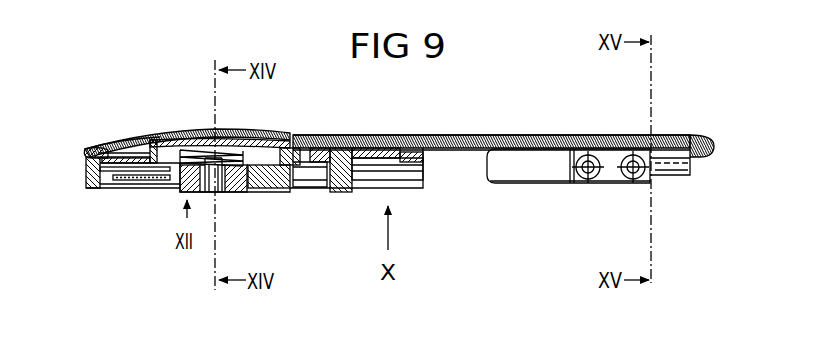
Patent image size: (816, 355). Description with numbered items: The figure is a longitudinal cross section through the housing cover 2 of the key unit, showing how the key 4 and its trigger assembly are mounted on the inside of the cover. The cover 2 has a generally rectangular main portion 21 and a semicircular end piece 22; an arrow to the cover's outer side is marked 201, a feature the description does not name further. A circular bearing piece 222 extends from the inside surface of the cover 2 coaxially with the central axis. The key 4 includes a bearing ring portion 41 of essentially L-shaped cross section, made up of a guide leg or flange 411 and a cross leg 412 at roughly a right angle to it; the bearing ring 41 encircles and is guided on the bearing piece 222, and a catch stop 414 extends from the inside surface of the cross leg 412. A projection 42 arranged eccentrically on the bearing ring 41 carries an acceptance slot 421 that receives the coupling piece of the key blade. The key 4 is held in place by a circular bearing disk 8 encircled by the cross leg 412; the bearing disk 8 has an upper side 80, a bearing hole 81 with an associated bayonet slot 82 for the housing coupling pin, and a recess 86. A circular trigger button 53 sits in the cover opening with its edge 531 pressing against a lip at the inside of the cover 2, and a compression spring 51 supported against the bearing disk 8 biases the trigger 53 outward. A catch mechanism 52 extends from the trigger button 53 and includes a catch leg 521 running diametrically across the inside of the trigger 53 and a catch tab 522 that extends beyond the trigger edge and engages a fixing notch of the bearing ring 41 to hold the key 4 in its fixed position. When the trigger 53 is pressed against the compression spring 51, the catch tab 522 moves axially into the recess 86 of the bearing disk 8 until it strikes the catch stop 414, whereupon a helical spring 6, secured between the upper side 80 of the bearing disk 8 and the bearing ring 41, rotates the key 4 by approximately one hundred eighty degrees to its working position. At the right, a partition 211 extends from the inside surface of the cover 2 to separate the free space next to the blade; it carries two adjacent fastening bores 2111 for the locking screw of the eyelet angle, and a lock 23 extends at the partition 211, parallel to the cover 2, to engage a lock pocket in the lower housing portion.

The housing cover 2 is at (683, 134).
The plate upper surface 201 is at (579, 132).
The main portion 21 is at (503, 184).
The partition 211 is at (549, 186).
The fastening bores 2111 is at (633, 181).
The semicircular end piece 22 is at (94, 149).
The bearing piece 222 is at (279, 198).
The lock 23 is at (672, 178).
The key 4 is at (415, 197).
The bearing ring portion 41 is at (76, 198).
The guide leg 411 is at (322, 137).
The cross leg 412 is at (336, 196).
The catch stop 414 is at (96, 205).
The projection 42 is at (411, 202).
The acceptance slot 421 is at (425, 182).
The compression spring 51 is at (226, 132).
The catch mechanism 52 is at (267, 198).
The catch leg 521 is at (291, 216).
The catch tab 522 is at (120, 147).
The trigger button 53 is at (203, 133).
The edge 531 is at (150, 138).
The helical spring 6 is at (133, 196).
The bearing disk 8 is at (233, 198).
The upper side 80 is at (171, 205).
The bearing hole 81 is at (208, 202).
The bayonet slot 82 is at (227, 246).
The recess 86 is at (104, 190).